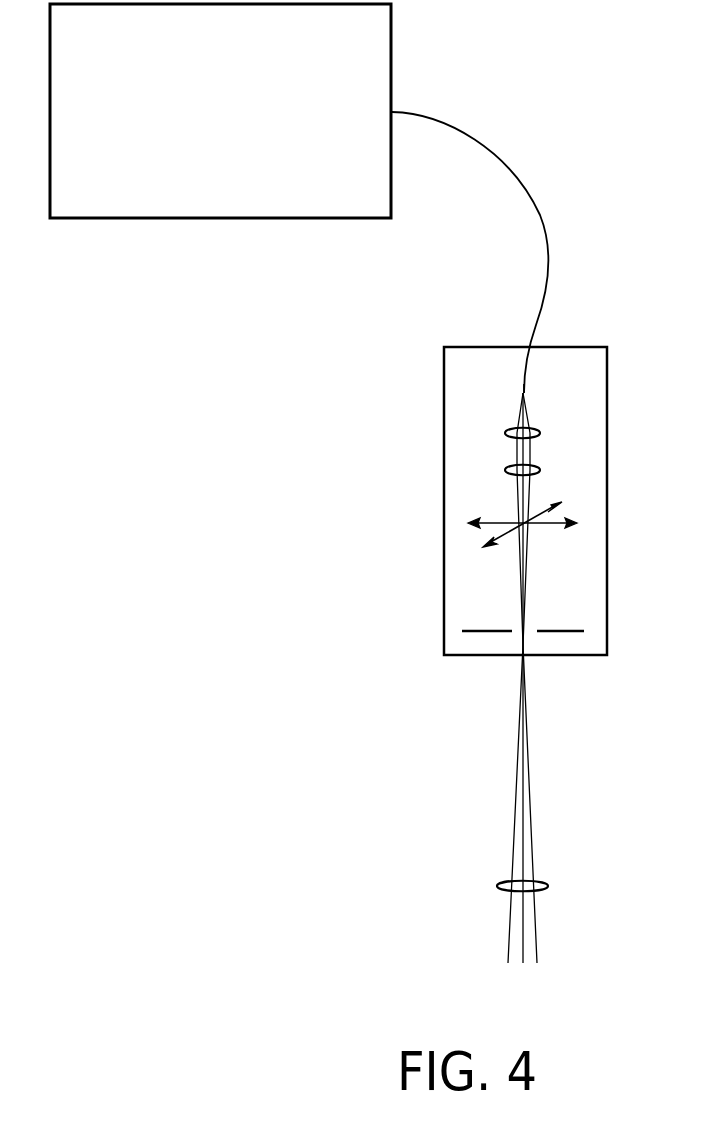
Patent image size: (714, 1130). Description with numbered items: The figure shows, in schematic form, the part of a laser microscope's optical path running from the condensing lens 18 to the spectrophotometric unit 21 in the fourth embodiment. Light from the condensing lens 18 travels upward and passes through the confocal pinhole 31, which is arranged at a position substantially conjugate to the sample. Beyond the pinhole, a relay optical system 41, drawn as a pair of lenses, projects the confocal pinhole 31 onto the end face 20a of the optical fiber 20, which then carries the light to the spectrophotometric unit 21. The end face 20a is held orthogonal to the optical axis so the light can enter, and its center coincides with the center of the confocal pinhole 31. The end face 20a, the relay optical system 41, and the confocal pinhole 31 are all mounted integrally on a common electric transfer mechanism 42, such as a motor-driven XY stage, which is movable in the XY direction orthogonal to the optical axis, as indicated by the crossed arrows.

The spectrophotometric unit 21 is at (392, 60).
The optical fiber 20 is at (547, 240).
The end face of the optical fiber 20a is at (523, 392).
The electric transfer mechanism 42 is at (607, 383).
The relay optical system 41 is at (541, 431).
The confocal pinhole 31 is at (561, 632).
The condensing lens 18 is at (549, 886).